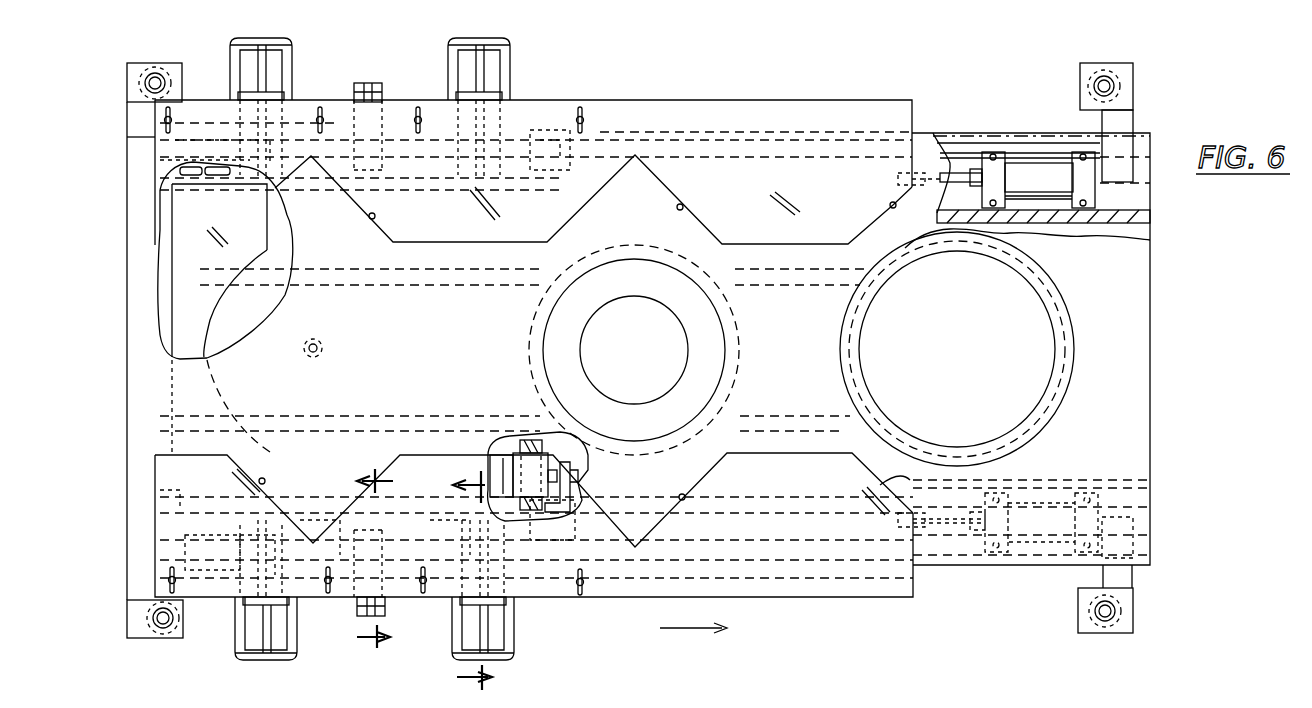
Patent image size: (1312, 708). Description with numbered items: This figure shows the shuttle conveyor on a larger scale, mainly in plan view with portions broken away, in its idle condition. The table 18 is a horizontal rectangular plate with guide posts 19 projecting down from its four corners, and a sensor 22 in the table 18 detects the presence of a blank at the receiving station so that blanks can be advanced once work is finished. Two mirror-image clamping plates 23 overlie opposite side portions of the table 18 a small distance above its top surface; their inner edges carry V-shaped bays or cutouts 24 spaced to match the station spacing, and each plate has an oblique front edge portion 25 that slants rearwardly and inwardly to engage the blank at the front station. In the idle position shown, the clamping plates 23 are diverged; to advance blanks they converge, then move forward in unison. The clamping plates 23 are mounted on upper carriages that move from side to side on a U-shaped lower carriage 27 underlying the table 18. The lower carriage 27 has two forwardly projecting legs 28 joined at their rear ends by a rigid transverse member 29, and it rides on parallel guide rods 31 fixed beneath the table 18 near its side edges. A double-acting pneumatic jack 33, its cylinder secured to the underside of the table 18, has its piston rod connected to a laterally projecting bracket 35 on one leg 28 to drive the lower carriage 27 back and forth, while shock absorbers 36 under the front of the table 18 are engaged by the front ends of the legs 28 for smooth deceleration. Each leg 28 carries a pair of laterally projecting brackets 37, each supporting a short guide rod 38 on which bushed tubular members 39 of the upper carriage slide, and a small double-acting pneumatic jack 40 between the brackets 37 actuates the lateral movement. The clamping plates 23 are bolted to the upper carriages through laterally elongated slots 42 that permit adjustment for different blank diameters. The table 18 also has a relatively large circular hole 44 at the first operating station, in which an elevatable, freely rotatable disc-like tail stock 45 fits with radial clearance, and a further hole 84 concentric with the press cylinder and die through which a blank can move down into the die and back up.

The table 18 is at (437, 367).
The guide posts 19 is at (147, 84).
The sensor 22 is at (318, 346).
The clamping plates 23 is at (808, 186).
The bays or cutouts 24 is at (375, 216).
The oblique front edge portion 25 is at (890, 205).
The U-shaped lower carriage 27 is at (160, 190).
The legs 28 is at (218, 182).
The transverse member 29 is at (207, 247).
The guide rods 31 is at (963, 146).
The double-acting pneumatic jack 33 is at (492, 432).
The bracket 35 is at (571, 487).
The shock absorbers 36 is at (1025, 165).
The brackets 37 is at (292, 78).
The guide rod 38 is at (265, 62).
The bushed tubular members 39 is at (272, 605).
The small double-acting pneumatic jack 40 is at (382, 112).
The slots 42 is at (583, 110).
The circular hole 44 is at (718, 318).
The tail stock 45 is at (690, 346).
The hole 84 is at (1055, 341).